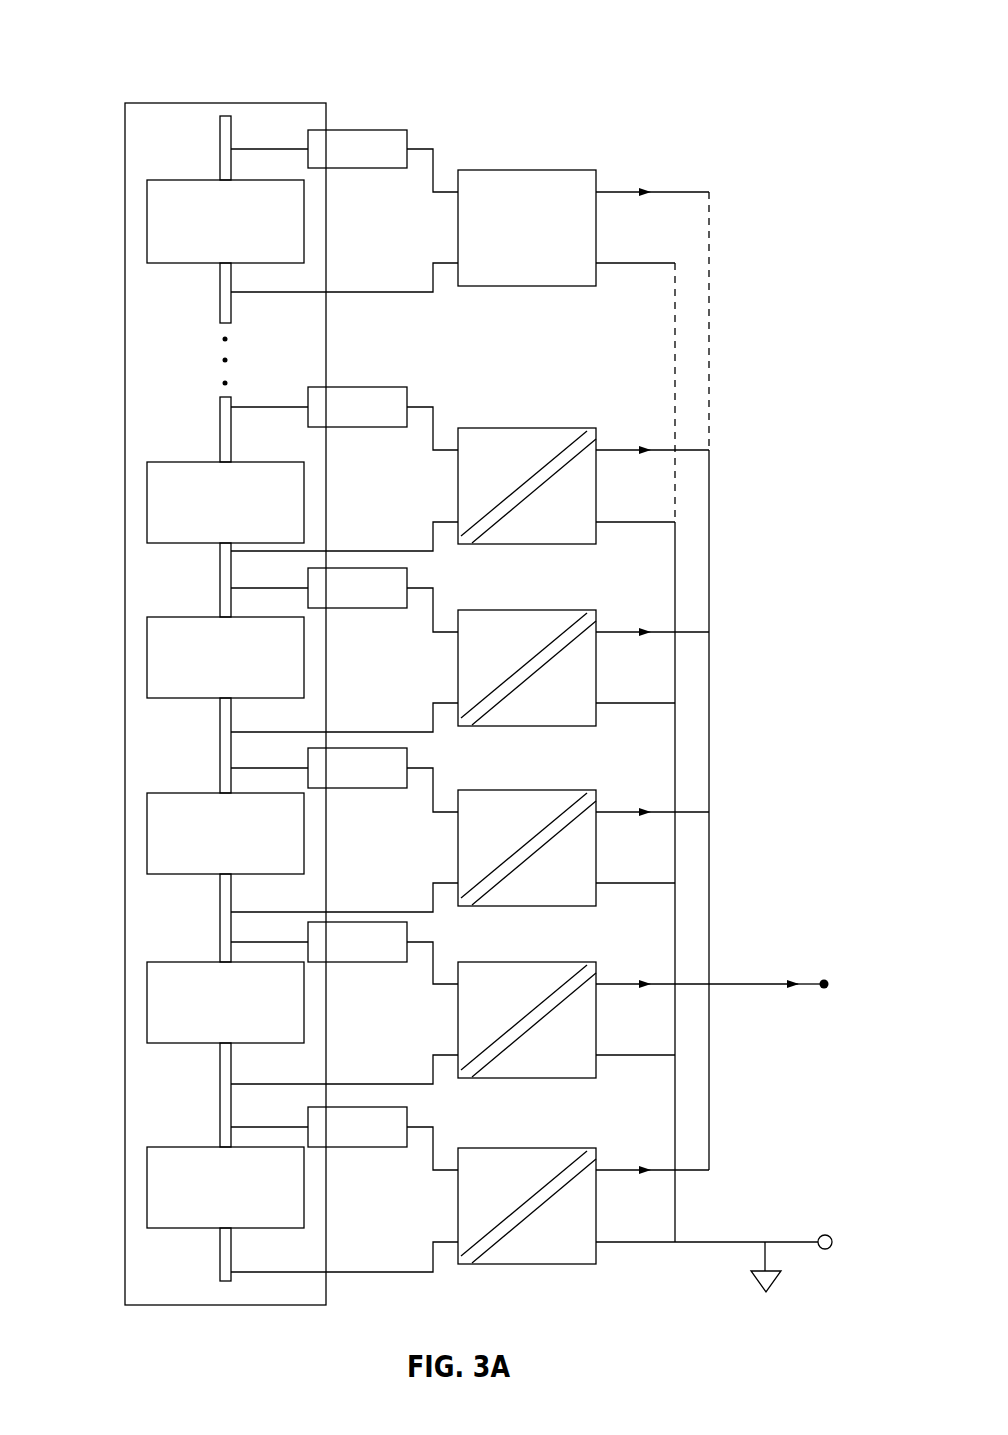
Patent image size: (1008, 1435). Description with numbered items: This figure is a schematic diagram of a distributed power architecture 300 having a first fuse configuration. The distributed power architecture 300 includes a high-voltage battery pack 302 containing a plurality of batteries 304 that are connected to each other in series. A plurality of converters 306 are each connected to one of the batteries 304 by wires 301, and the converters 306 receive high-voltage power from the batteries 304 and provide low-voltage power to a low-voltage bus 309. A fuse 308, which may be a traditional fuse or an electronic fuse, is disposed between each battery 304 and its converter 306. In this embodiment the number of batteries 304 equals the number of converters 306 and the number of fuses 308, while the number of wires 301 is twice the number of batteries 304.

The distributed power architecture 300 is at (147, 45).
The wires 301 is at (253, 300).
The high-voltage battery pack 302 is at (295, 84).
The batteries 304 is at (248, 235).
The converters 306 is at (549, 240).
The fuse 308 is at (380, 163).
The low-voltage bus 309 is at (828, 967).